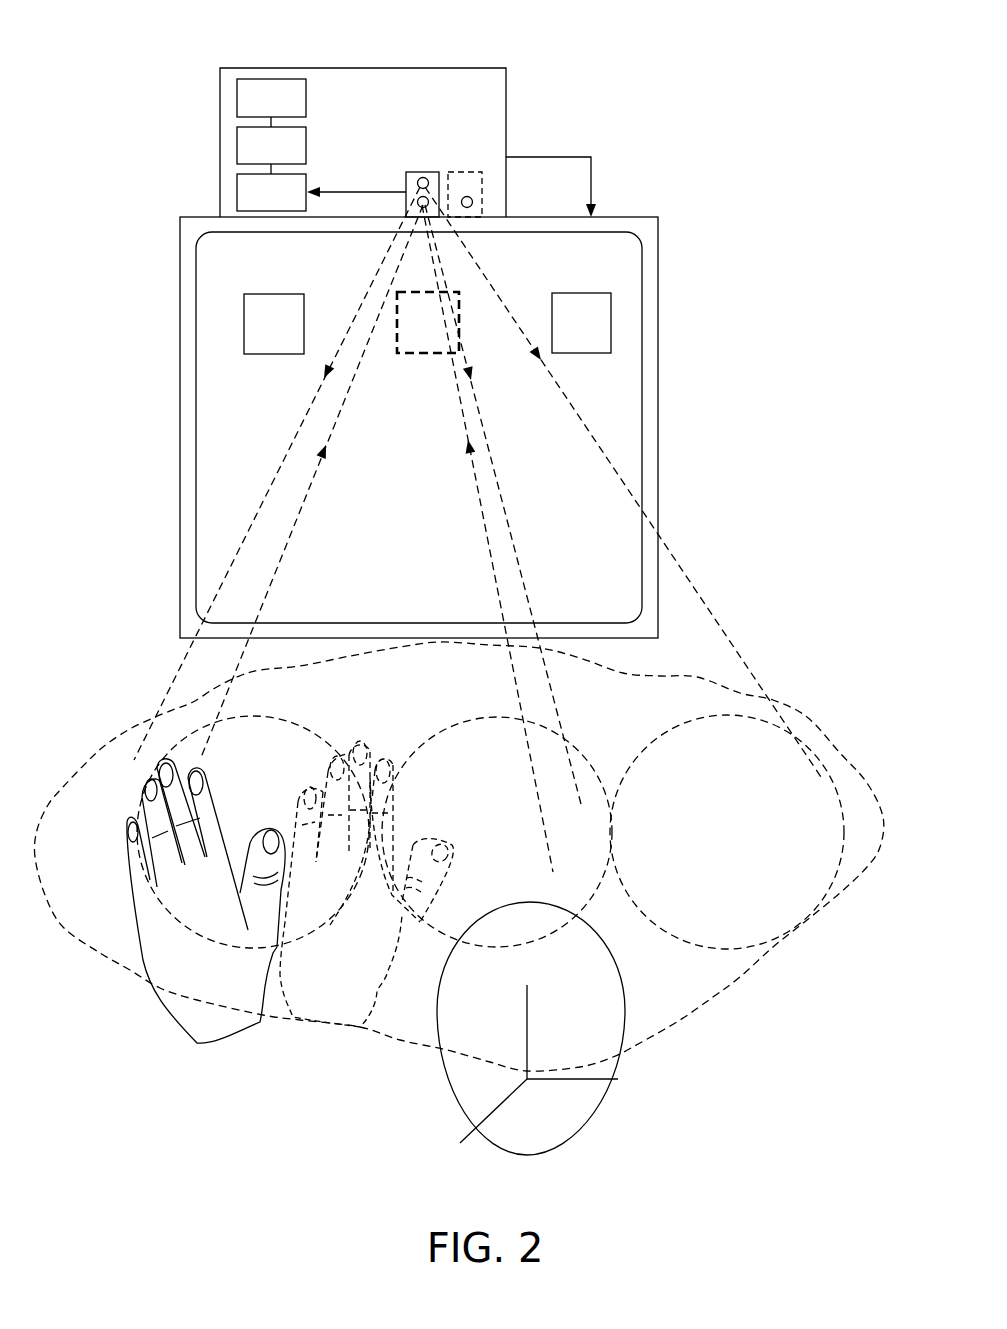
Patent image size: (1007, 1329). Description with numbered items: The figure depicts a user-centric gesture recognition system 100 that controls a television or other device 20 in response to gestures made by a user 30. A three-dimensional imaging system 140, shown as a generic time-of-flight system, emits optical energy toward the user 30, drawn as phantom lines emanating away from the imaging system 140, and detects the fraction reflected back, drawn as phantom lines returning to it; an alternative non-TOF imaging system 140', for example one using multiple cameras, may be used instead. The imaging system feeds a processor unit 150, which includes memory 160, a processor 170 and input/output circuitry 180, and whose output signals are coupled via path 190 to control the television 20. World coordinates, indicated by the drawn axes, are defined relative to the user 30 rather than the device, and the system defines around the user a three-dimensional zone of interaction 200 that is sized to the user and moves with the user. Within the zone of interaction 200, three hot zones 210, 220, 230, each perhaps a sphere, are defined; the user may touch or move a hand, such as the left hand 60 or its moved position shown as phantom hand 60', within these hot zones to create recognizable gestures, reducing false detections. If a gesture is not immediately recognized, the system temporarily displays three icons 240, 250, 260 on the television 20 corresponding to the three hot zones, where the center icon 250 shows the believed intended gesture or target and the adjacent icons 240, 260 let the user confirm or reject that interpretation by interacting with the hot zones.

The television 20 is at (205, 393).
The user 30 is at (440, 1067).
The left hand 60 is at (182, 901).
The phantom hand 60' is at (366, 900).
The gesture recognition system 100 is at (768, 301).
The three-dimensional imaging system 140 is at (416, 168).
The three-dimensional imaging system 140' is at (460, 168).
The processor unit 150 is at (424, 65).
The memory 160 is at (236, 103).
The processor 170 is at (236, 150).
The input/output circuitry 180 is at (236, 196).
The path 190 is at (529, 155).
The zone of interaction 200 is at (722, 1001).
The hot zone 210 is at (265, 710).
The hot zone 220 is at (507, 705).
The hot zone 230 is at (660, 716).
The icon 240 is at (283, 294).
The center icon 250 is at (410, 292).
The icon 260 is at (583, 293).